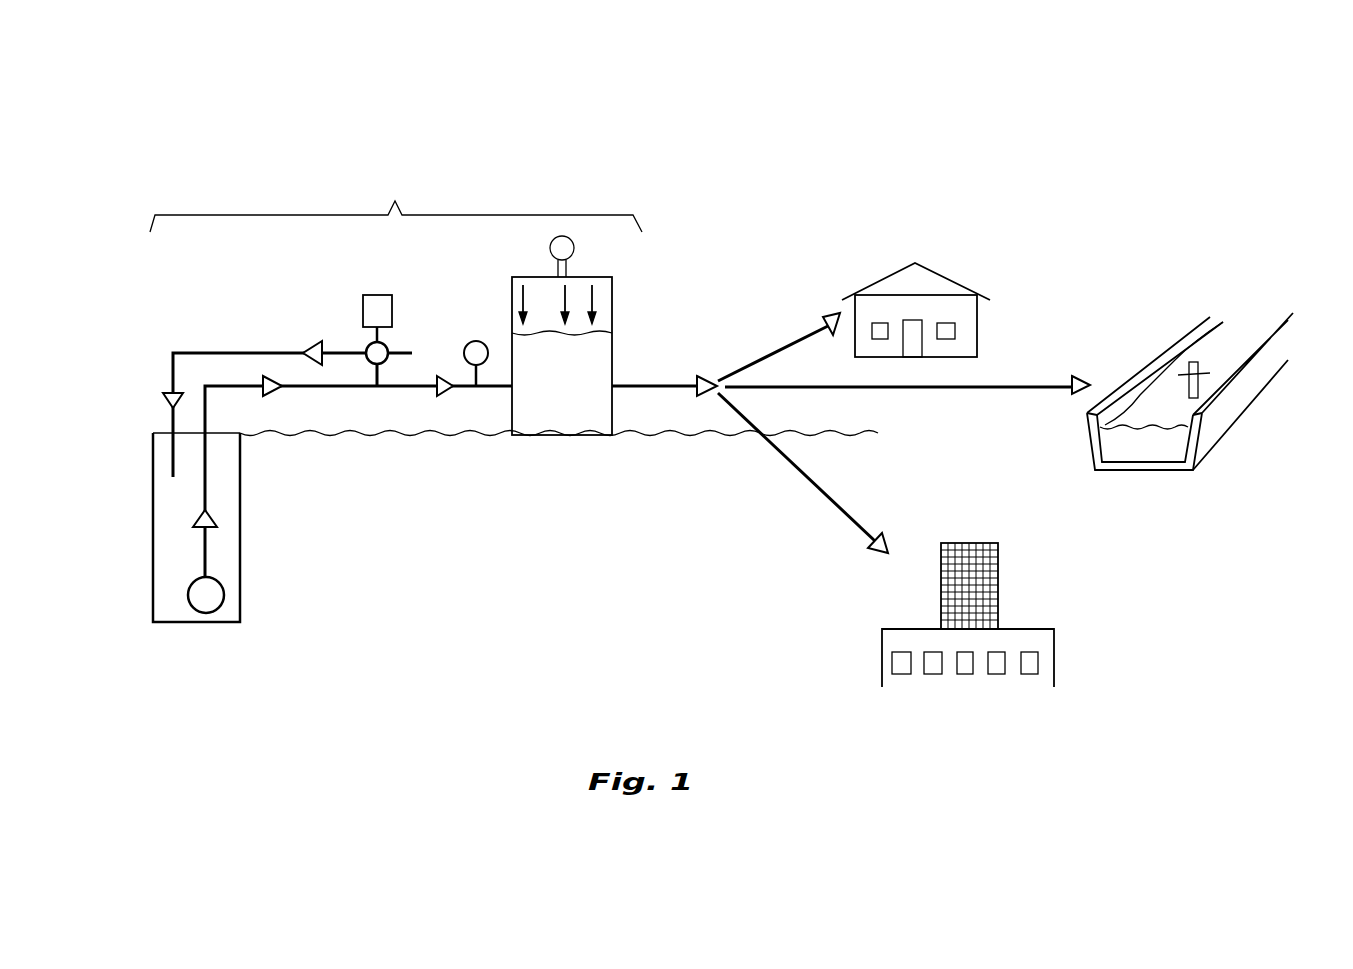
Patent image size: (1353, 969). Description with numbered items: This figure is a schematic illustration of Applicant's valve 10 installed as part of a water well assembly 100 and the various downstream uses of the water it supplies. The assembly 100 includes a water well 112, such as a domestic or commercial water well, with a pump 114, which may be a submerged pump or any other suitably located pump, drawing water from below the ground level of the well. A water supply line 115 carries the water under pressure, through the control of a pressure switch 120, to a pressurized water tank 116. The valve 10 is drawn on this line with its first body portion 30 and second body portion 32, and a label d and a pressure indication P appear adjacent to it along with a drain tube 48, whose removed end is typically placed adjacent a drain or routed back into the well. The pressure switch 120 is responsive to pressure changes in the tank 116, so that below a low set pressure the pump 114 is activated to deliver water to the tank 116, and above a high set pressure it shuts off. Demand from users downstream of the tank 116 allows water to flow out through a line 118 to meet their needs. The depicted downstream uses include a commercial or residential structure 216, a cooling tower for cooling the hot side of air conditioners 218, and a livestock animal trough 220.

The water well assembly 100 is at (396, 201).
The valve 10 is at (352, 335).
The pressure switch 120 is at (378, 295).
The valve displacement d is at (385, 345).
The first body portion 30 is at (405, 347).
The second body portion 32 is at (373, 361).
The drain tube 48 is at (268, 345).
The water supply line 115 is at (300, 387).
The water well 112 is at (242, 553).
The pump 114 is at (223, 592).
The pressure gauge P is at (476, 349).
The pressurized water tank 116 is at (613, 307).
The line 118 is at (638, 385).
The commercial or residential structure 216 is at (956, 265).
The air conditioners 218 is at (1023, 602).
The livestock animal trough 220 is at (1158, 337).